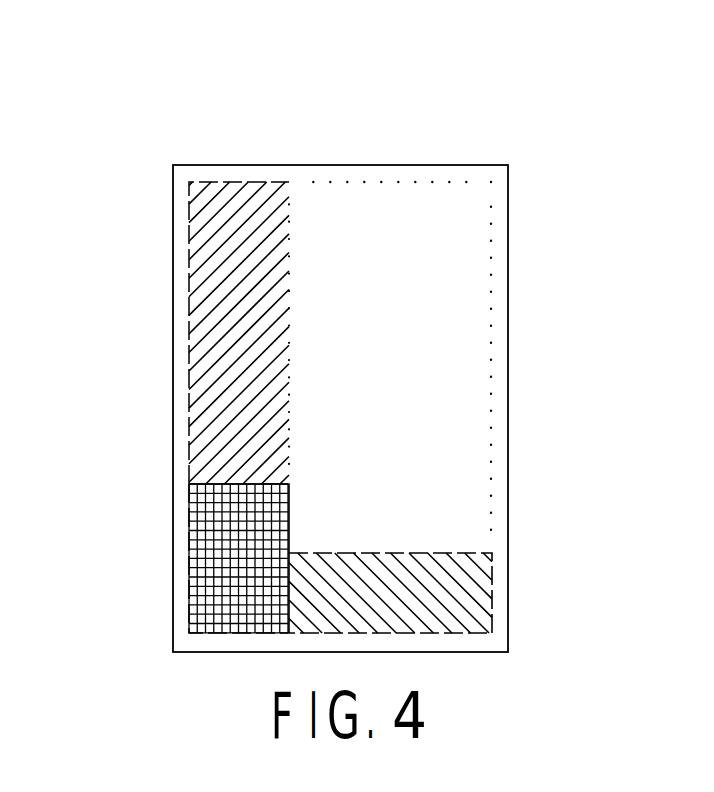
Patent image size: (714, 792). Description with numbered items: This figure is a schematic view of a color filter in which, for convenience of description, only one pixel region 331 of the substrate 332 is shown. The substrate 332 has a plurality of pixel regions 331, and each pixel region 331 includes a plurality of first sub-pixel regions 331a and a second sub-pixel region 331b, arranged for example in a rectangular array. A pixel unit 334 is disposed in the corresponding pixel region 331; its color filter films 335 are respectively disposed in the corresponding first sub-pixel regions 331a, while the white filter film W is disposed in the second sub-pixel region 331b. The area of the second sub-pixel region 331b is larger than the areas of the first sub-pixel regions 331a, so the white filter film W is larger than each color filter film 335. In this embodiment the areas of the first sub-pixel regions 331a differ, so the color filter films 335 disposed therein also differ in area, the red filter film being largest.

The pixel region 331 is at (327, 262).
The first sub-pixel region 331a is at (230, 182).
The second sub-pixel region 331b is at (389, 237).
The substrate 332 is at (502, 466).
The pixel unit 334 is at (181, 287).
The color filter film 335 is at (342, 336).